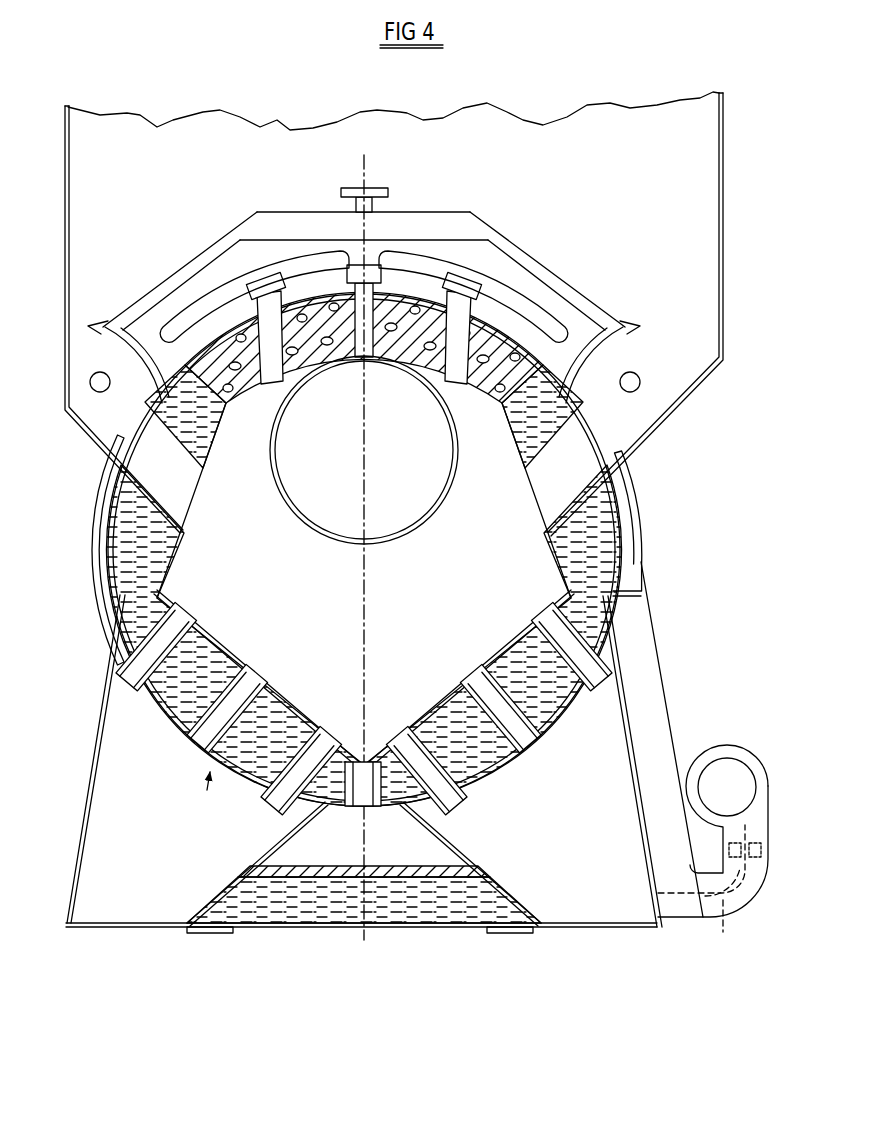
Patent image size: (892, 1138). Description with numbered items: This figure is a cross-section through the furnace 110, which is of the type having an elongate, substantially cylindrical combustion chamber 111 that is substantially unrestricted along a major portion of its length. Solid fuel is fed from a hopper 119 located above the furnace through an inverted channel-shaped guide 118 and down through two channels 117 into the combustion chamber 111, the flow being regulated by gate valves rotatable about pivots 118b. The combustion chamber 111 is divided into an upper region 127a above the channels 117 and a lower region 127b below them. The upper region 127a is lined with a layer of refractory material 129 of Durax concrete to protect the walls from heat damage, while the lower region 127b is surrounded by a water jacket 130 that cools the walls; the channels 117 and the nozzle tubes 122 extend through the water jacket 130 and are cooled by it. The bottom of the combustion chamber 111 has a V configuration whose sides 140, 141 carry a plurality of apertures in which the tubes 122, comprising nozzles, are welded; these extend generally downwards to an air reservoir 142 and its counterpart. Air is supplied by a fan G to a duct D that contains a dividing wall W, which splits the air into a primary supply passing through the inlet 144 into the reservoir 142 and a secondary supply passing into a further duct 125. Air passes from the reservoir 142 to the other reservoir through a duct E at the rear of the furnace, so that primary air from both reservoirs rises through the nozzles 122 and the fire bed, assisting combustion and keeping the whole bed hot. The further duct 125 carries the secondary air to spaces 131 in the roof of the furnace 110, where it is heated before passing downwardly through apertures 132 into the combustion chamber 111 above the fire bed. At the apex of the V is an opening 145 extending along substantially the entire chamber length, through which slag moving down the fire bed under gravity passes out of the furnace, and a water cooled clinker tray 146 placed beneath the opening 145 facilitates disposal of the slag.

The furnace 110 is at (650, 477).
The combustion chamber 111 is at (332, 547).
The channels 117 is at (360, 481).
The inverted channel-shaped guide 118 is at (537, 277).
The pivots 118b is at (96, 393).
The hopper 119 is at (69, 256).
The tubes 122 is at (291, 737).
The further duct 125 is at (672, 709).
The upper region 127a is at (604, 323).
The lower region 127b is at (218, 799).
The layer of refractory material 129 is at (438, 358).
The water jacket 130 is at (138, 531).
The spaces 131 is at (322, 270).
The apertures 132 is at (470, 345).
The side of the V 140 is at (237, 660).
The side of the V 141 is at (456, 693).
The air reservoir 142 is at (364, 764).
The inlet 144 is at (673, 908).
The opening 145 is at (364, 852).
The water cooled clinker tray 146 is at (438, 897).
The duct E is at (275, 848).
The fan G is at (744, 762).
The duct D is at (744, 894).
The dividing wall W is at (731, 929).